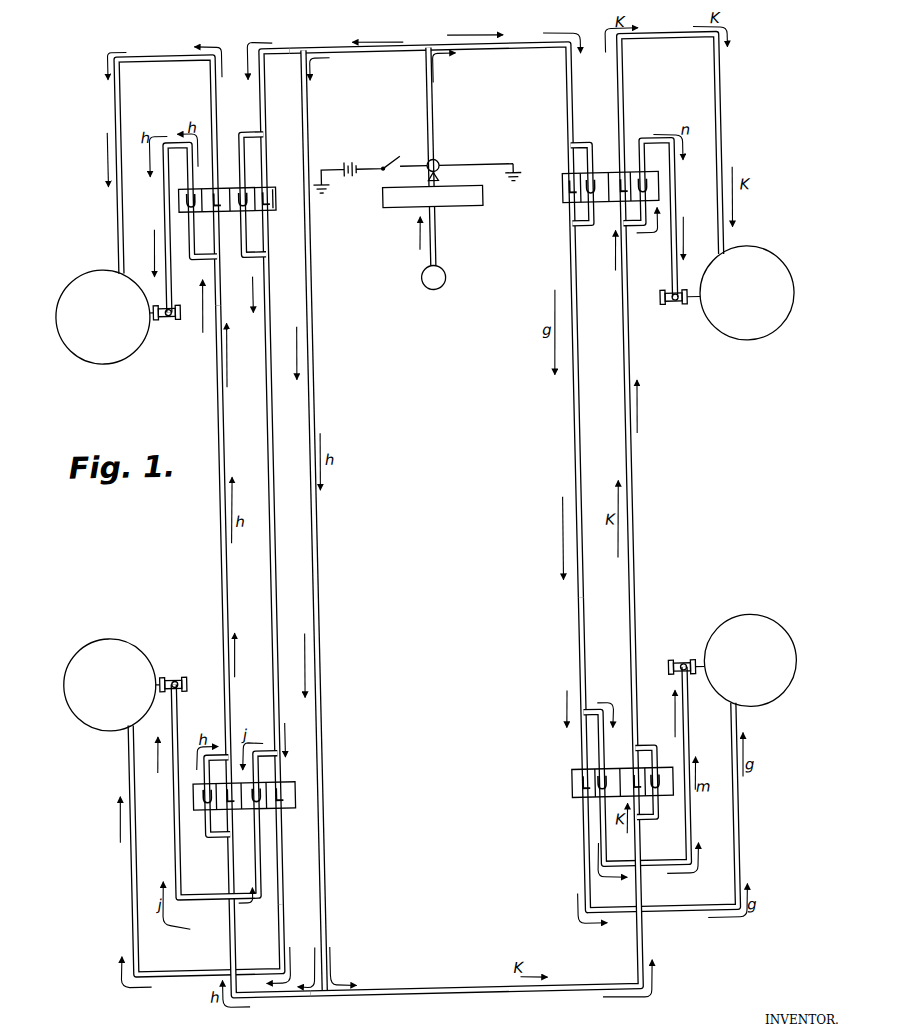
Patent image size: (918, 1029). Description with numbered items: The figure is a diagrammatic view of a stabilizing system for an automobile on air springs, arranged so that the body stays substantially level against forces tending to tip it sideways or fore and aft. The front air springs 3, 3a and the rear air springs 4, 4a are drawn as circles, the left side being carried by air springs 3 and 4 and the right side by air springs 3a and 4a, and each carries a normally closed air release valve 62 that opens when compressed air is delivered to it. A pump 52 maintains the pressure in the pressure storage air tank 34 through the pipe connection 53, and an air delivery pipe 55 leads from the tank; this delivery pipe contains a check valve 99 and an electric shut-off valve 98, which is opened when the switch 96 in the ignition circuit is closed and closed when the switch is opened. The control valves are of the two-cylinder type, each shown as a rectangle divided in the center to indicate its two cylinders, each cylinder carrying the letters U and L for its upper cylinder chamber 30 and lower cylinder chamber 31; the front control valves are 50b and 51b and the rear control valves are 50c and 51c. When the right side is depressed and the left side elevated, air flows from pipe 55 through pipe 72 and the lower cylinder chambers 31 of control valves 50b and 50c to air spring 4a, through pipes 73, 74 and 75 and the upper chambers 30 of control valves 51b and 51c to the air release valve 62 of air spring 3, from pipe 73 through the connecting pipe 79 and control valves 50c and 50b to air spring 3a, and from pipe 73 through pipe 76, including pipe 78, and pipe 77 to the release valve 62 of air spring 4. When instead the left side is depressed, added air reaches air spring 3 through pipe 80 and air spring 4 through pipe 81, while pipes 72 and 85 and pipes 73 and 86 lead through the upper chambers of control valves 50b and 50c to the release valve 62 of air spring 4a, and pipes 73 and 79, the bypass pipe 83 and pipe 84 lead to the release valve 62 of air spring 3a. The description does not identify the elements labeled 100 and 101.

The left front air spring 3 is at (90, 270).
The right front air spring 3a is at (780, 262).
The left rear air spring 4 is at (85, 641).
The right rear air spring 4a is at (748, 624).
The upper cylinder chamber 30 is at (251, 181).
The lower cylinder chamber 31 is at (229, 207).
The pressure storage air tank 34 is at (488, 207).
The front control valve 50b is at (568, 208).
The rear control valve 50c is at (613, 769).
The front control valve 51b is at (233, 182).
The rear control valve 51c is at (286, 805).
The pump 52 is at (427, 281).
The pipe connection 53 is at (442, 249).
The air delivery pipe 55 is at (442, 104).
The air release valve 62 is at (174, 316).
The pipe 72 is at (577, 101).
The pipe 73 is at (365, 52).
The pipe 74 is at (221, 930).
The pipe 75 is at (170, 204).
The pipe 76 is at (270, 96).
The pipe 77 is at (210, 888).
The pipe 78 is at (251, 251).
The connecting pipe 79 is at (725, 88).
The pipe 80 is at (178, 52).
The pipe 81 is at (124, 878).
The bypass pipe 83 is at (649, 751).
The pipe 84 is at (652, 142).
The pipe 85 is at (593, 228).
The pipe 86 is at (684, 830).
The switch 96 is at (396, 157).
The electric shut-off valve 98 is at (446, 160).
The check valve 99 is at (449, 178).
The pipe 100 is at (571, 170).
The valve 101 is at (280, 183).